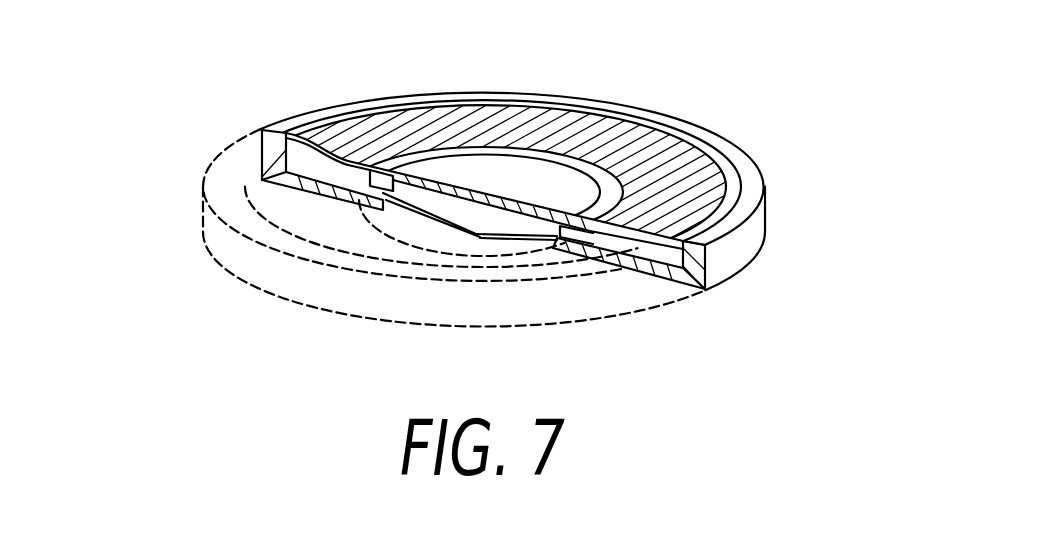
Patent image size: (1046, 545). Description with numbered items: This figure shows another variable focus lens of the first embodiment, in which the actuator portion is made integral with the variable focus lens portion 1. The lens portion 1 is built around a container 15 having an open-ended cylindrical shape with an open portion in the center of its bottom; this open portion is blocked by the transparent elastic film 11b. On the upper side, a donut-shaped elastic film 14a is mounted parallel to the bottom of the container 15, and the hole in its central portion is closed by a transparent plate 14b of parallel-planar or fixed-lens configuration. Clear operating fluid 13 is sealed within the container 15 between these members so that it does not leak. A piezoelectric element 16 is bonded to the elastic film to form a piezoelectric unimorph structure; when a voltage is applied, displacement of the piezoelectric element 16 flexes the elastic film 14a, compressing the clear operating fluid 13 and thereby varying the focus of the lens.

The variable focus lens portion 1 is at (507, 266).
The transparent elastic film 11b is at (541, 243).
The clear operating fluid 13 is at (298, 178).
The donut-shaped elastic film 14a is at (722, 169).
The transparent plate 14b is at (516, 163).
The container 15 is at (766, 217).
The piezoelectric element 16 is at (660, 140).